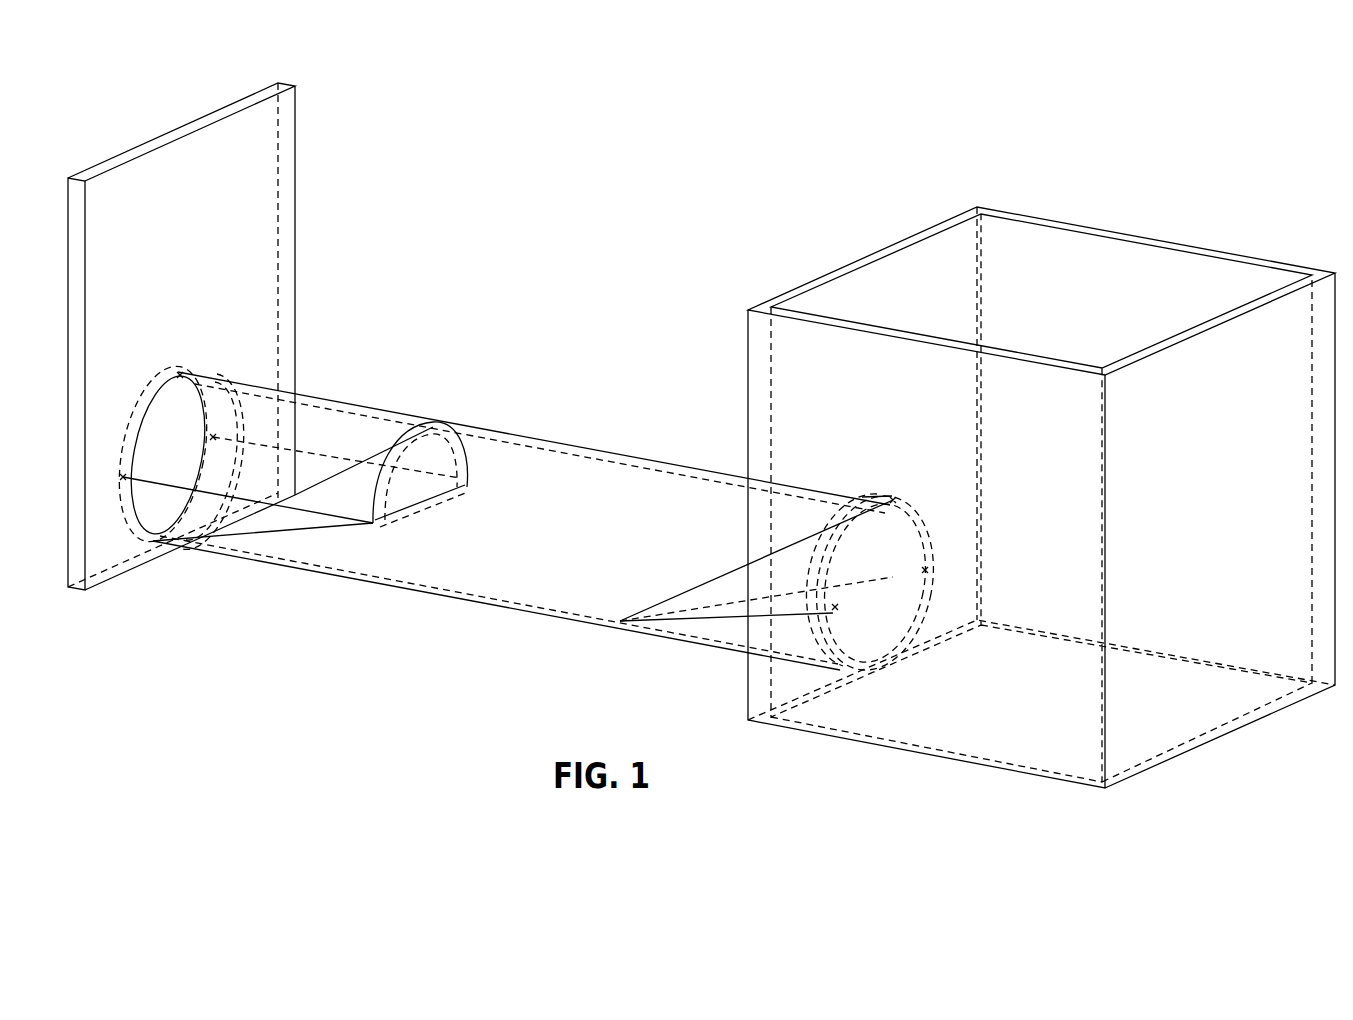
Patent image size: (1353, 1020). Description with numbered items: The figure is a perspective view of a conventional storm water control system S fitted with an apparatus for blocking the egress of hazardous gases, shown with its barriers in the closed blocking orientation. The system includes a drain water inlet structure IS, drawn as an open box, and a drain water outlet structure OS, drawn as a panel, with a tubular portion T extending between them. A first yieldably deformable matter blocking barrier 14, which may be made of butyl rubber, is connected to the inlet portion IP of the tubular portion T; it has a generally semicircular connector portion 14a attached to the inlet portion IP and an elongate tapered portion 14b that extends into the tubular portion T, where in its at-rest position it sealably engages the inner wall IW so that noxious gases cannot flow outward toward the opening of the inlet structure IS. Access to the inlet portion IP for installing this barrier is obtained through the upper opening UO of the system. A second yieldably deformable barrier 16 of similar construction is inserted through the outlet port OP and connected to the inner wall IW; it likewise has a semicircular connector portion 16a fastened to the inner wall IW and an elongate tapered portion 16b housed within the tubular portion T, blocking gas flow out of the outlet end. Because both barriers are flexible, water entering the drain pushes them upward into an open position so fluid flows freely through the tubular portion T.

The storm water control system S is at (679, 216).
The drain water outlet structure OS is at (297, 143).
The outlet port OP is at (130, 438).
The tubular portion T is at (497, 430).
The inner wall IW is at (590, 453).
The second yieldably deformable barrier 16 is at (296, 485).
The semicircular connector portion 16a is at (412, 428).
The elongate tapered portion 16b is at (297, 498).
The first yieldably deformable matter blocking barrier 14 is at (756, 541).
The semicircular connector portion 14a is at (890, 494).
The elongate tapered portion 14b is at (697, 627).
The inlet portion IP is at (893, 650).
The upper opening UO is at (1041, 452).
The drain water inlet structure IS is at (1205, 247).